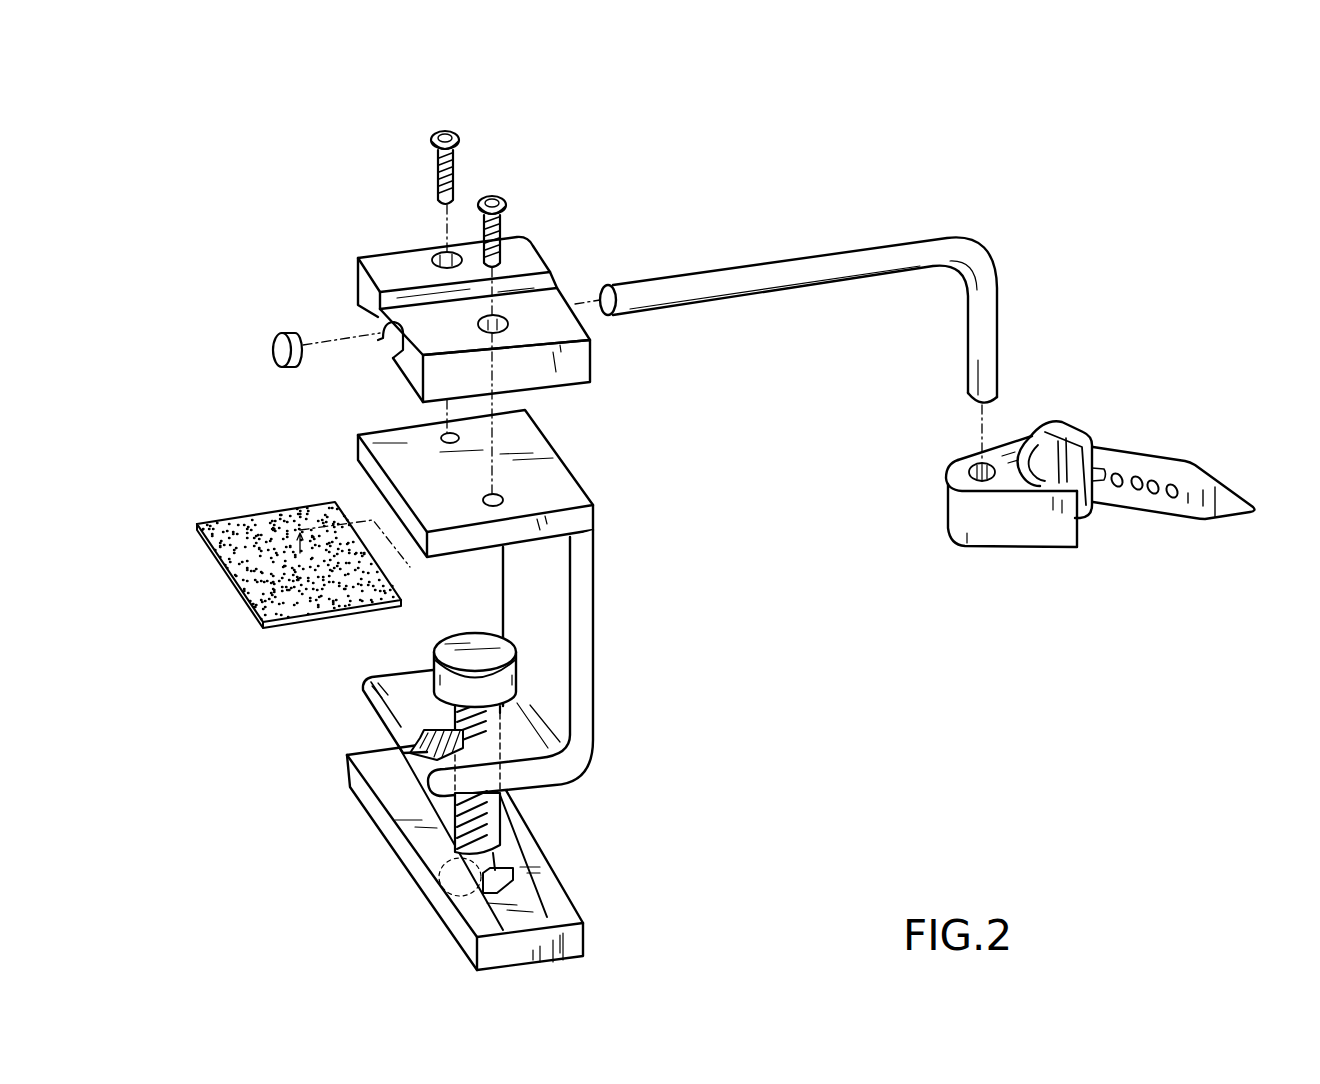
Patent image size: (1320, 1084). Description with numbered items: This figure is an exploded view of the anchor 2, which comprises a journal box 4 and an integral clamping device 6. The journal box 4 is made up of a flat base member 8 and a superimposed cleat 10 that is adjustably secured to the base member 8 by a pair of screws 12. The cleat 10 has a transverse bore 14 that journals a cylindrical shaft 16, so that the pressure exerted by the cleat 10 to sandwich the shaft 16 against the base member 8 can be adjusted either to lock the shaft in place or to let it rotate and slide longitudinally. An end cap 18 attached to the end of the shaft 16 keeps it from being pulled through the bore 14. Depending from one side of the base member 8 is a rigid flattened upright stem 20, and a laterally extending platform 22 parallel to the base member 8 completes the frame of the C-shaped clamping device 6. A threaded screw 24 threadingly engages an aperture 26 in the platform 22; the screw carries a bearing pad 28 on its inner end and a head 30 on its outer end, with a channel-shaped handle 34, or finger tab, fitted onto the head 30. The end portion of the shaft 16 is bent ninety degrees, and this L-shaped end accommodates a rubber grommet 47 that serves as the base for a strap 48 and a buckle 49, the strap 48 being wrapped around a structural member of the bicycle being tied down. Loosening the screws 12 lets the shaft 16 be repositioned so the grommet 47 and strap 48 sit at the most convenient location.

The anchor 2 is at (647, 535).
The journal box 4 is at (598, 425).
The clamping device 6 is at (356, 643).
The base member 8 is at (565, 489).
The cleat 10 is at (527, 257).
The screws 12 is at (463, 134).
The transverse bore 14 is at (383, 326).
The cylindrical shaft 16 is at (638, 293).
The end cap 18 is at (273, 349).
The upright stem 20 is at (583, 584).
The laterally extending platform 22 is at (400, 717).
The threaded screw 24 is at (490, 812).
The aperture 26 is at (497, 718).
The bearing pad 28 is at (457, 637).
The head 30 is at (505, 878).
The handle 34 is at (560, 907).
The rubber grommet 47 is at (960, 464).
The strap 48 is at (1038, 530).
The buckle 49 is at (1087, 436).